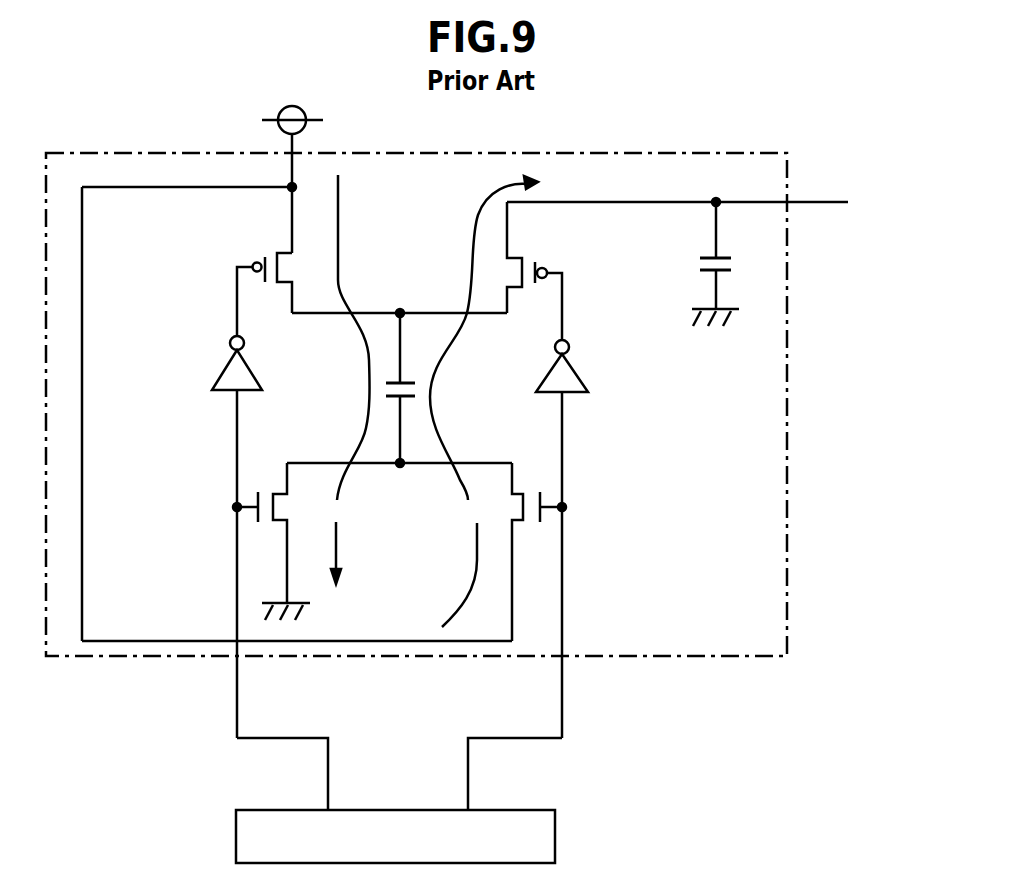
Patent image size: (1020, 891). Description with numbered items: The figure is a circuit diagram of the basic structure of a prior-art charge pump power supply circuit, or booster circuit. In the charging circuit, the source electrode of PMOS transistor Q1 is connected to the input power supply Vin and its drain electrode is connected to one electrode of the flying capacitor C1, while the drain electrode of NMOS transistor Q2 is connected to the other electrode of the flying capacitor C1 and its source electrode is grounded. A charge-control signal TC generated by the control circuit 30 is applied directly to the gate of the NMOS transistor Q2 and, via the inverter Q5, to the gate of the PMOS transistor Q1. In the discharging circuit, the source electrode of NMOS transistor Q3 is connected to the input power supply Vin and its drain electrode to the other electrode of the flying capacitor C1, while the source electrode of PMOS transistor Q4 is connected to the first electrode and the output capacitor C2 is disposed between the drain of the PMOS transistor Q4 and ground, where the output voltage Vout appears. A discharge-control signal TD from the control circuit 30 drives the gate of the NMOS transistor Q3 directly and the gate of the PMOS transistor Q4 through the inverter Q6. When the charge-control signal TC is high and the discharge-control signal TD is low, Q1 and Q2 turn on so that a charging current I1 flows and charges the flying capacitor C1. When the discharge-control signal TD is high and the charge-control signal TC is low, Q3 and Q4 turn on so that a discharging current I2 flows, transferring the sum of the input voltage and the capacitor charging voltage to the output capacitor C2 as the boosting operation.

The PMOS transistor Q1 is at (264, 282).
The NMOS transistor Q2 is at (286, 541).
The NMOS transistor Q3 is at (506, 552).
The PMOS transistor Q4 is at (534, 271).
The inverter Q5 is at (223, 537).
The inverter Q6 is at (574, 539).
The flying capacitor C1 is at (382, 388).
The output capacitor C2 is at (702, 264).
The control circuit 30 is at (555, 830).
The charging current I1 is at (352, 379).
The discharging current I2 is at (484, 401).
The charge-control signal TC is at (282, 757).
The discharge-control signal TD is at (515, 757).
The input power supply Vin is at (293, 129).
The output voltage Vout is at (708, 204).